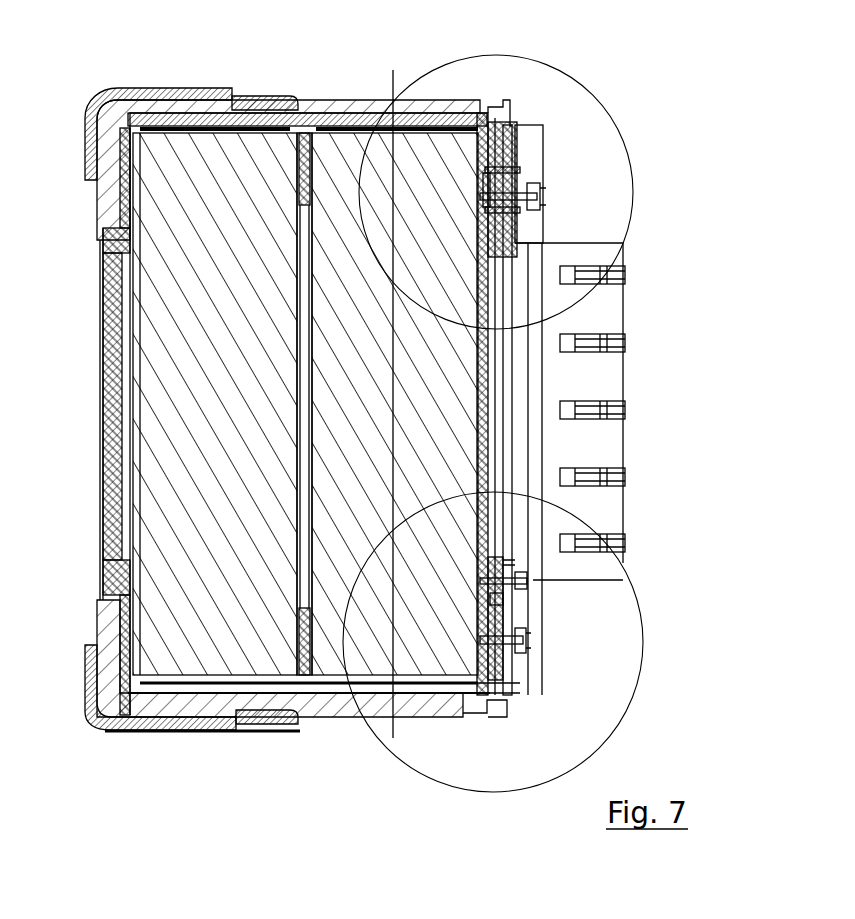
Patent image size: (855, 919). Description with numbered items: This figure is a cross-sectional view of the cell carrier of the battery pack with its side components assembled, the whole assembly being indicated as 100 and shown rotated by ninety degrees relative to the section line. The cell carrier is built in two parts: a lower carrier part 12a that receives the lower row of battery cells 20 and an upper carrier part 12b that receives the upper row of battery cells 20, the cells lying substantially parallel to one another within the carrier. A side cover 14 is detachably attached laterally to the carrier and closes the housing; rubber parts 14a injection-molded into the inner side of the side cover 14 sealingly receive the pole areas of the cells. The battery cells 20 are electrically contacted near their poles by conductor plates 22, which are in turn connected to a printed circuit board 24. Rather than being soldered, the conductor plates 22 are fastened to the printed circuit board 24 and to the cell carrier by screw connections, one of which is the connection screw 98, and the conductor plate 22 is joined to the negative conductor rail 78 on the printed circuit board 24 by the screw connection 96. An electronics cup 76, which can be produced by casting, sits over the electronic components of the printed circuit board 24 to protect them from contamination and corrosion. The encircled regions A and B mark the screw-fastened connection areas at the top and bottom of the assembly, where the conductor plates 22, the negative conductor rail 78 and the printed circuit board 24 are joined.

The battery module assembly 100 is at (383, 369).
The side cover 14 is at (206, 92).
The rubber part 14a is at (279, 104).
The lower carrier part 12a is at (108, 347).
The upper carrier part 12b is at (527, 148).
The battery cell 20 is at (318, 302).
The conductor plate 22 is at (510, 112).
The negative conductor rail 78 is at (535, 160).
The screw connection 96 is at (530, 172).
The electronics cup 76 is at (602, 375).
The printed circuit board 24 is at (508, 607).
The connection screw 98 is at (528, 650).
The detail A is at (613, 107).
The detail B is at (620, 533).